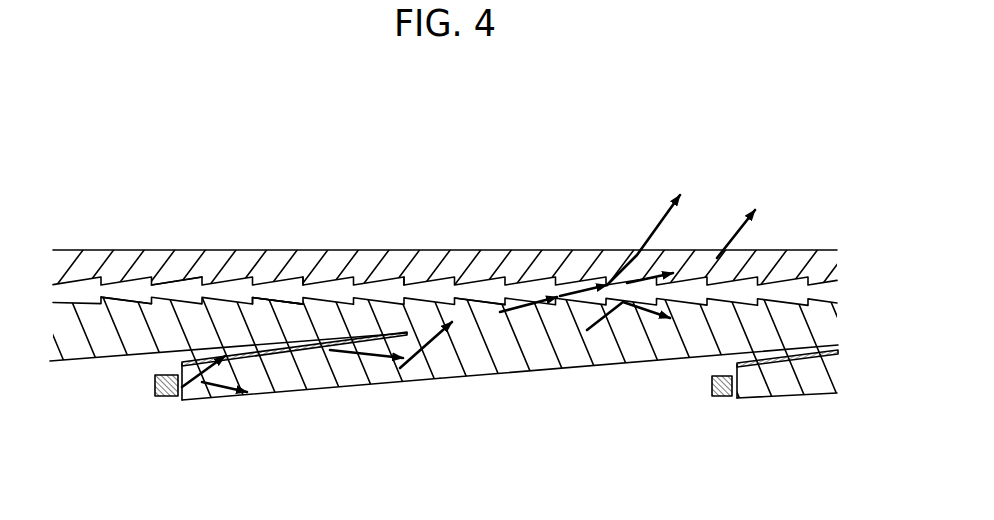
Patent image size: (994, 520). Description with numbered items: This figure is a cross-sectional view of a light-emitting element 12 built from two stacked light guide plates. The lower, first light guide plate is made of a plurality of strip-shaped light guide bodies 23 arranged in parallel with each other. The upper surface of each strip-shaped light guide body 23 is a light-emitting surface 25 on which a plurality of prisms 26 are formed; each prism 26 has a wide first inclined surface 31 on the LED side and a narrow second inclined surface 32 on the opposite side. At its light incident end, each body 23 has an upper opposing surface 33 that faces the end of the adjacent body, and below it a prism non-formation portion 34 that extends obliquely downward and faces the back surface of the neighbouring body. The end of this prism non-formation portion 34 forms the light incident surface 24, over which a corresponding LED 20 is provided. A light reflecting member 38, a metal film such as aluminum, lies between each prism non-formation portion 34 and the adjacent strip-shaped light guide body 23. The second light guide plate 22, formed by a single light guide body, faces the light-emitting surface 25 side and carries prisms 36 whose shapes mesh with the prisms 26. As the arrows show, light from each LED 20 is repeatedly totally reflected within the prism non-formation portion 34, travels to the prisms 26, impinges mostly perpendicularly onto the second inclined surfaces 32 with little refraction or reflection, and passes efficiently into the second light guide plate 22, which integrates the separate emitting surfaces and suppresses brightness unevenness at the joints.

The light guide unit 12 is at (465, 295).
The LED 20 is at (155, 392).
The second light guide plate 22 is at (222, 257).
The strip-shaped light guide body 23 is at (77, 363).
The light incident surface 24 is at (180, 399).
The light-emitting surface 25 is at (273, 303).
The prism 26 is at (253, 296).
The first inclined surface 31 is at (132, 301).
The second inclined surface 32 is at (153, 301).
The upper opposing surface 33 is at (398, 306).
The prism non-formation portion 34 is at (206, 400).
The prism 36 is at (310, 287).
The light reflecting member 38 is at (322, 348).